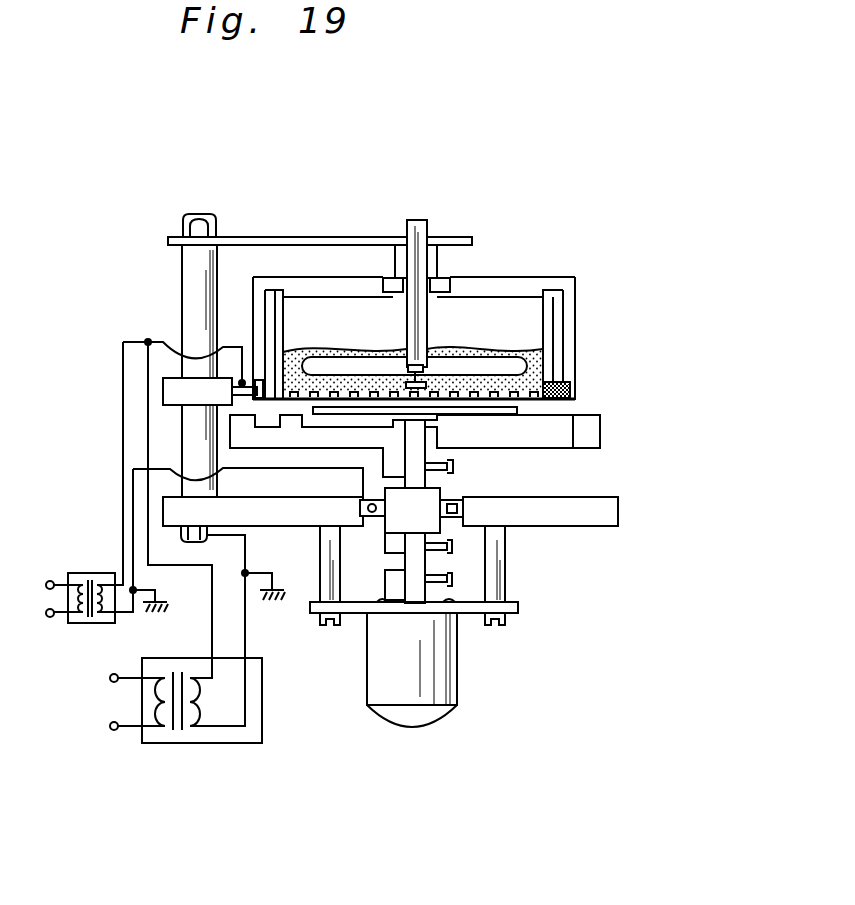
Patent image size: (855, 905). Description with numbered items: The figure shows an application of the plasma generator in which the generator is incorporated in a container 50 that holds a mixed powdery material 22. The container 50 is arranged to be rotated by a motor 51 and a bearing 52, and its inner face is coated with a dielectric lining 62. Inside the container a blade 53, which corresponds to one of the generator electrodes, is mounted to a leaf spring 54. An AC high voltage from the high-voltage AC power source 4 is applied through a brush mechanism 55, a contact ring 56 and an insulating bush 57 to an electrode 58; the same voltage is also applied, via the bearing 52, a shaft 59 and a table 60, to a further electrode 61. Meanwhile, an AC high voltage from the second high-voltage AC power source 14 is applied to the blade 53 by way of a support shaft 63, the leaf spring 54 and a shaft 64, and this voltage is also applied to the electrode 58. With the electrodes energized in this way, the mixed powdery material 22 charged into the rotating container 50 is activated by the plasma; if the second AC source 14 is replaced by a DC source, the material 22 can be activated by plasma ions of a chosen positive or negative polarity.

The high-voltage AC power source 4 is at (82, 625).
The high-voltage AC power source 14 is at (202, 743).
The mixed powdery material 22 is at (497, 347).
The container 50 is at (575, 337).
The motor 51 is at (448, 666).
The bearing 52 is at (470, 503).
The blade 53 is at (512, 363).
The leaf spring 54 is at (322, 237).
The brush mechanism 55 is at (240, 350).
The contact ring 56 is at (260, 380).
The insulating bush 57 is at (560, 375).
The electrode 58 is at (470, 393).
The shaft 59 is at (413, 435).
The table 60 is at (580, 435).
The electrode 61 is at (593, 420).
The dielectric lining 62 is at (547, 332).
The support shaft 63 is at (188, 282).
The shaft 64 is at (413, 228).